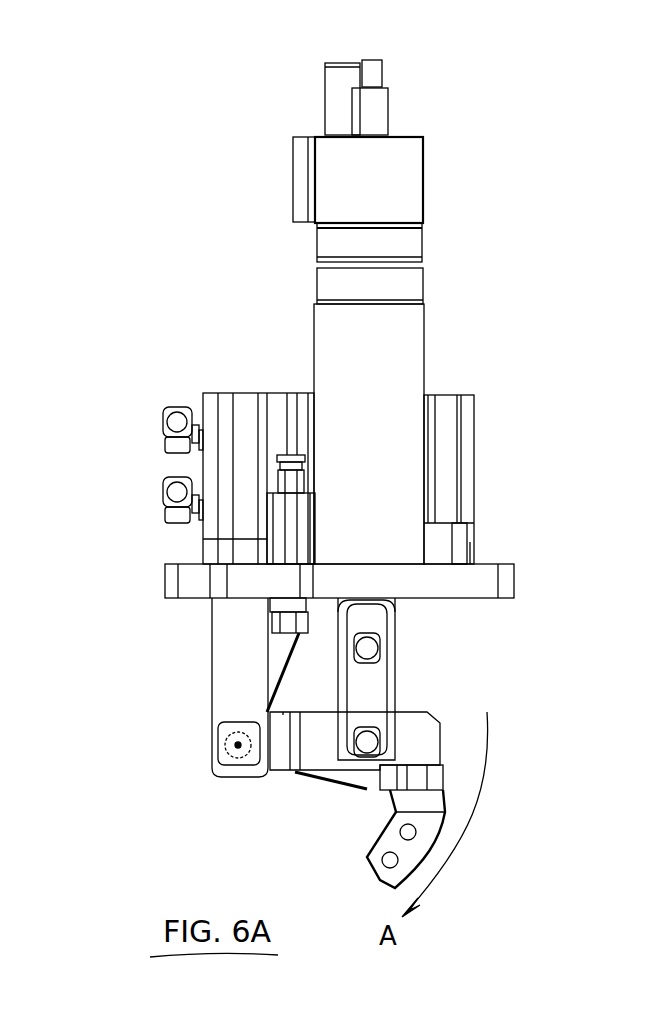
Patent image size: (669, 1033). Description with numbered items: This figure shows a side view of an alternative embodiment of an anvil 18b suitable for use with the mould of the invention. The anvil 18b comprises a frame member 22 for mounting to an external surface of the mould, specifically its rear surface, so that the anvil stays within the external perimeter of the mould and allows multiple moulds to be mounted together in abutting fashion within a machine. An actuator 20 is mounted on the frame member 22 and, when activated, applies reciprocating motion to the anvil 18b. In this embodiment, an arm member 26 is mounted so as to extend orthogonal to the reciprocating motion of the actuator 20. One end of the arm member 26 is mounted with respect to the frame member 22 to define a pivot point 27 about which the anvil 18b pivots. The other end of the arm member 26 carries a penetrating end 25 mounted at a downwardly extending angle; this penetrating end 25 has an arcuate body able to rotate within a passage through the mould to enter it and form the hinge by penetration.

The anvil 18b is at (353, 474).
The frame member 22 is at (410, 352).
The actuator 20 is at (468, 453).
The pivot point 27 is at (236, 745).
The arm member 26 is at (317, 758).
The penetrating end 25 is at (343, 853).